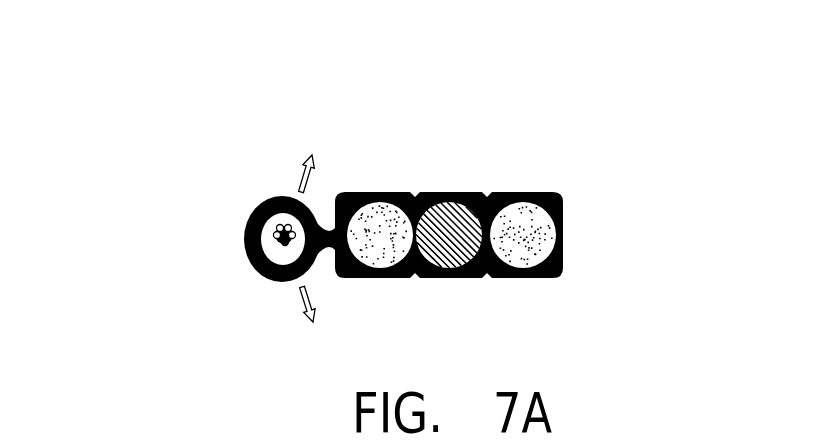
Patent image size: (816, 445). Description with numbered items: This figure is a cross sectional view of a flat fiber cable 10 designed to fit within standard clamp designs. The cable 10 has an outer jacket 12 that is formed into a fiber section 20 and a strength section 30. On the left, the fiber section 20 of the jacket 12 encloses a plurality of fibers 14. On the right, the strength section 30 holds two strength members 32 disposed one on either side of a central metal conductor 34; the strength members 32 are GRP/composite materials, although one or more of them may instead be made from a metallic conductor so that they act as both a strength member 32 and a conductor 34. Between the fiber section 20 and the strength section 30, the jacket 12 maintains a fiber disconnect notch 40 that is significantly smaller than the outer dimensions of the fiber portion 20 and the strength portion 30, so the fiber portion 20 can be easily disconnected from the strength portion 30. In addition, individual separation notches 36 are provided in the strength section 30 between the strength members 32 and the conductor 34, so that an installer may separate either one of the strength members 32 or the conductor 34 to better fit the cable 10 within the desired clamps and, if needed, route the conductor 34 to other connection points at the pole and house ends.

The cable 10 is at (153, 107).
The outer jacket 12 is at (397, 192).
The fibers 14 is at (278, 229).
The fiber section 20 is at (270, 283).
The strength section 30 is at (467, 277).
The strength members 32 is at (538, 238).
The central metal conductor 34 is at (450, 213).
The strength section individual separation notches 36 is at (488, 195).
The fiber disconnect notch 40 is at (328, 256).